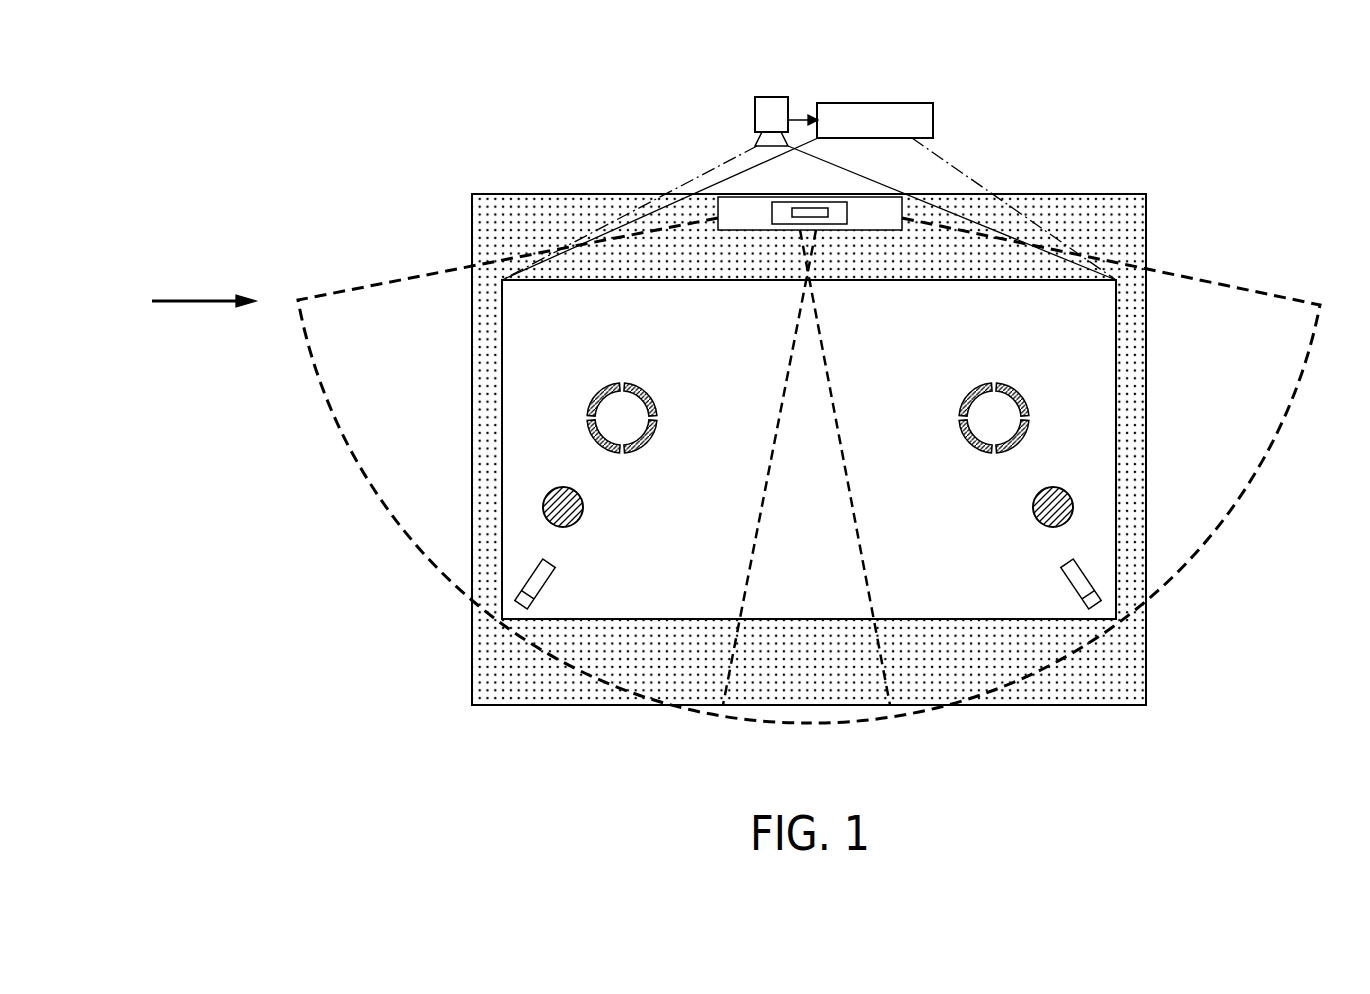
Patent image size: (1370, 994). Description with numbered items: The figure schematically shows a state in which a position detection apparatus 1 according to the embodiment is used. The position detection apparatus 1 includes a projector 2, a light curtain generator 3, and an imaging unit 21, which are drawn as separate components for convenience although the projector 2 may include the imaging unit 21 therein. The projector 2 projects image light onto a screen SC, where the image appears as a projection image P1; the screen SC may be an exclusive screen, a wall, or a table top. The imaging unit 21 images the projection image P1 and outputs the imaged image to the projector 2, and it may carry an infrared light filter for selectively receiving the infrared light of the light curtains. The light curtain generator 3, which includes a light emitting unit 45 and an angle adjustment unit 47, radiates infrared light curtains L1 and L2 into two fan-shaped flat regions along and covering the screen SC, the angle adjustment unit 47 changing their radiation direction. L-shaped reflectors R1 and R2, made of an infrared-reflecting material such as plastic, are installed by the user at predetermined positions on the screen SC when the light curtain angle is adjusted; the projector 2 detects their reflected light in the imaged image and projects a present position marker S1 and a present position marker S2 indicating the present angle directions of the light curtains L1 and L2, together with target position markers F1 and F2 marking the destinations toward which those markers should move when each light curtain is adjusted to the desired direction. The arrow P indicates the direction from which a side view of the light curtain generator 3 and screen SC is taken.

The position detection apparatus 1 is at (508, 172).
The projector 2 is at (922, 103).
The imaging unit 21 is at (778, 97).
The light curtain generator 3 is at (749, 230).
The light emitting unit 45 is at (850, 222).
The angle adjustment unit 47 is at (827, 218).
The screen SC is at (1075, 196).
The projection image P1 is at (1118, 400).
The arrow P is at (192, 300).
The light curtain L1 is at (352, 292).
The light curtain L2 is at (1265, 292).
The target position marker F1 is at (598, 393).
The target position marker F2 is at (1019, 393).
The present position marker S1 is at (543, 507).
The present position marker S2 is at (1073, 507).
The reflector R1 is at (521, 591).
The reflector R2 is at (1095, 591).